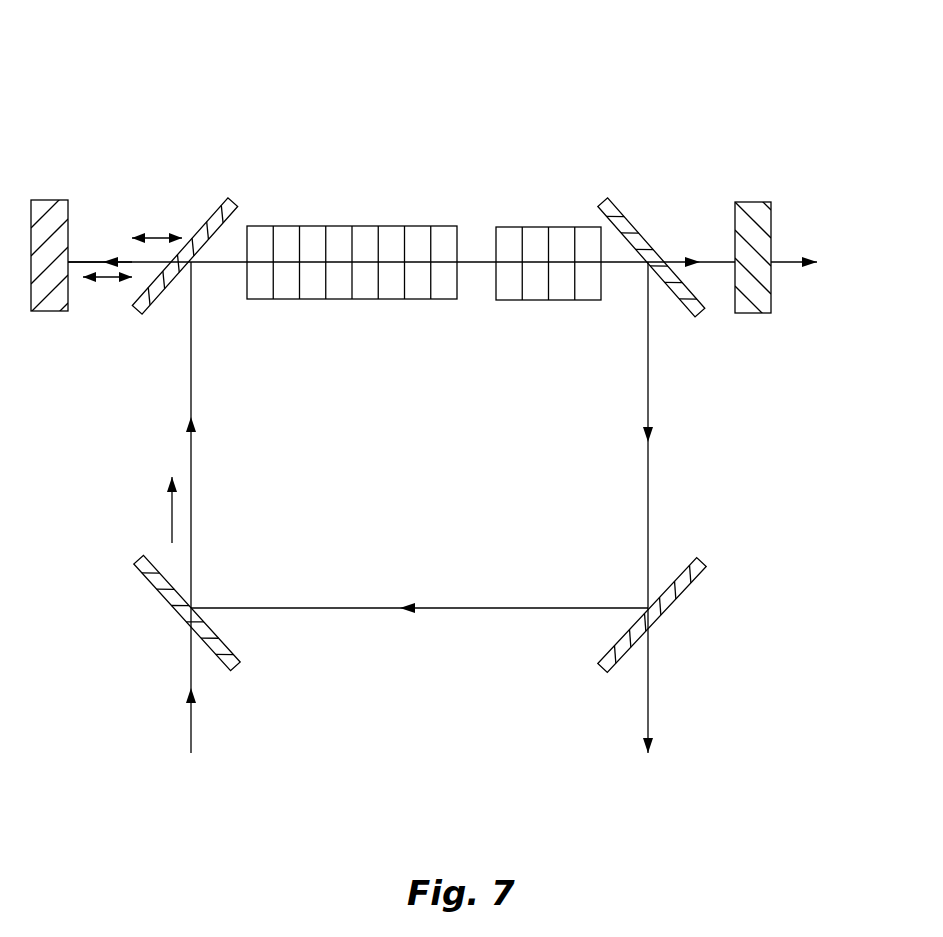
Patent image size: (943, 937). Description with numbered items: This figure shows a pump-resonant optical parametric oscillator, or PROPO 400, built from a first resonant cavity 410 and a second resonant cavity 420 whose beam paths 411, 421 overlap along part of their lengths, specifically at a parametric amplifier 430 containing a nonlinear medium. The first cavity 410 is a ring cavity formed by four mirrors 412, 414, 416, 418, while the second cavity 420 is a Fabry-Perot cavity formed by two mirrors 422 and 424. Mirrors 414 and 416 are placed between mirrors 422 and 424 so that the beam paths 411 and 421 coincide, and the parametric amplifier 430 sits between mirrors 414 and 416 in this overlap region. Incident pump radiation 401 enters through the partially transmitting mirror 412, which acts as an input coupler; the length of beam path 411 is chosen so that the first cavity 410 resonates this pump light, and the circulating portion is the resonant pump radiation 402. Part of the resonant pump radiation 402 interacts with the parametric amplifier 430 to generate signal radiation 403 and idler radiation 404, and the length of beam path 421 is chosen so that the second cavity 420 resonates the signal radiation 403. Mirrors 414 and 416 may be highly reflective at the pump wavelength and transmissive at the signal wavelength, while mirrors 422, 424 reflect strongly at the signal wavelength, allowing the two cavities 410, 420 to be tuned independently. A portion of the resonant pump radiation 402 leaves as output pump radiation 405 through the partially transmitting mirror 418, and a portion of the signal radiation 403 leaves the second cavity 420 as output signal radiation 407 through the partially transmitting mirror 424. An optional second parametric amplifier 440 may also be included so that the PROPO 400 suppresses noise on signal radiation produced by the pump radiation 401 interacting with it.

The PROPO 400 is at (211, 64).
The incident pump radiation 401 is at (190, 717).
The resonant pump radiation 402 is at (170, 508).
The signal radiation 403 is at (160, 235).
The idler radiation 404 is at (113, 282).
The output pump radiation 405 is at (648, 695).
The output signal radiation 407 is at (812, 247).
The first resonant cavity 410 is at (105, 410).
The beam path 411 is at (517, 608).
The mirror 412 is at (155, 593).
The mirror 414 is at (208, 212).
The mirror 416 is at (640, 230).
The mirror 418 is at (673, 607).
The second resonant cavity 420 is at (795, 193).
The beam path 421 is at (90, 258).
The mirror 422 is at (52, 200).
The mirror 424 is at (745, 202).
The parametric amplifier 430 is at (338, 225).
The second parametric amplifier 440 is at (527, 227).